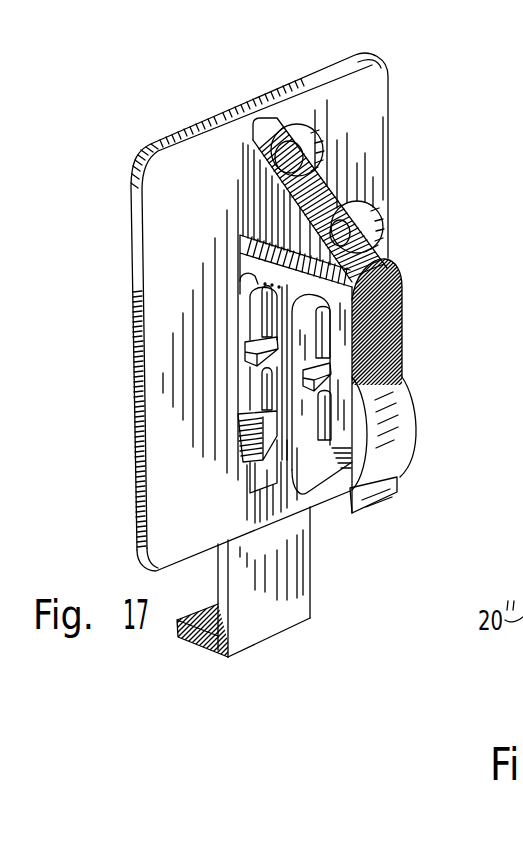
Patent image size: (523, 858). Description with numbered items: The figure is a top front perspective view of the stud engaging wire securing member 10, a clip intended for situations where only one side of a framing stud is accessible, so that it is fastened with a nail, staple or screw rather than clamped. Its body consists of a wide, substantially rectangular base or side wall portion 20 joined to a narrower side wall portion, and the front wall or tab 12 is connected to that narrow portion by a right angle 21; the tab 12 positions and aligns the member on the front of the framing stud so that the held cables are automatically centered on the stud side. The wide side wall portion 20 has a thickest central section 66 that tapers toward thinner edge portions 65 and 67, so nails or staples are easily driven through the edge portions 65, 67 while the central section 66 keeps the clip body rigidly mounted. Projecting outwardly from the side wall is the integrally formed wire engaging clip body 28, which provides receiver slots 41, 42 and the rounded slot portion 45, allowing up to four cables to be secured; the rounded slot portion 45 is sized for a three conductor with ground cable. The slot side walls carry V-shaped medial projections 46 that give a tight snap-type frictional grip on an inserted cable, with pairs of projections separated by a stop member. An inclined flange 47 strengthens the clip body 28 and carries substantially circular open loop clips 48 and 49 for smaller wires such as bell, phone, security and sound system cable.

The stud engaging wire securing member 10 is at (104, 60).
The edge portion 65 is at (150, 150).
The central section 66 is at (262, 98).
The edge portion 67 is at (355, 57).
The inclined flange 47 is at (256, 194).
The open loop clip 48 is at (321, 148).
The open loop clip 49 is at (382, 230).
The wire engaging clip body 28 is at (398, 291).
The receiver slot 42 is at (330, 352).
The rounded slot portion 45 is at (333, 437).
The receiver slot 41 is at (245, 297).
The medial projection 46 is at (250, 343).
The side wall portion 20 is at (160, 275).
The front wall 12 is at (195, 645).
The right angle 21 is at (237, 657).